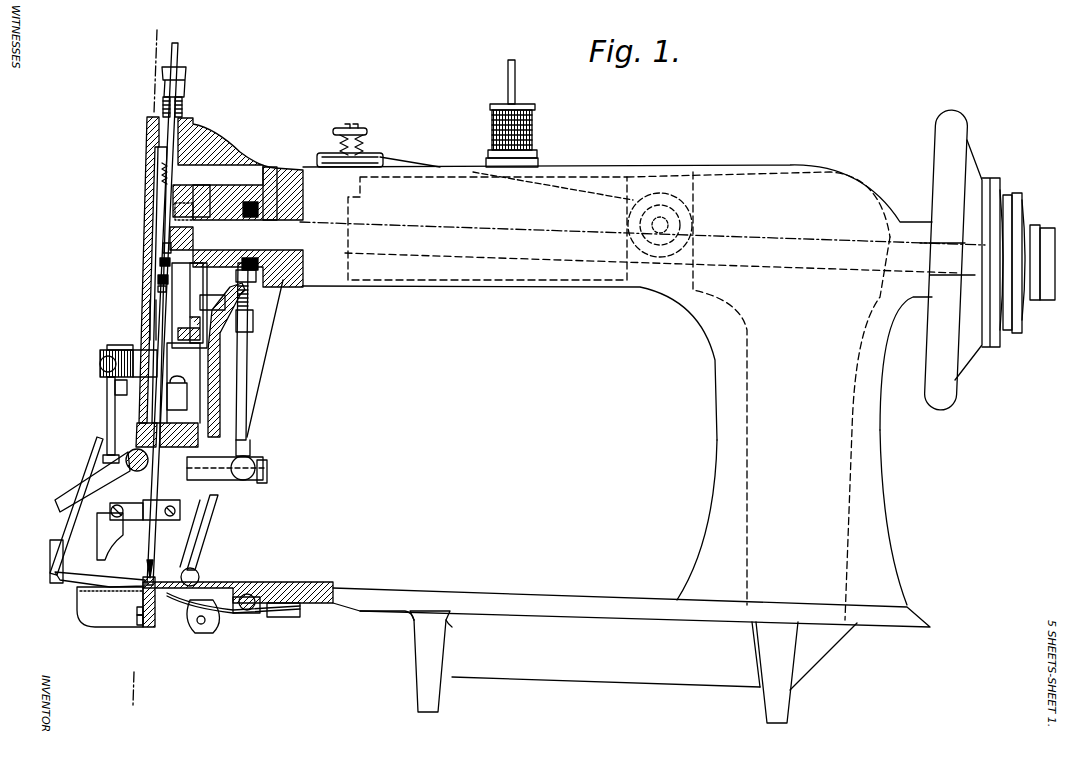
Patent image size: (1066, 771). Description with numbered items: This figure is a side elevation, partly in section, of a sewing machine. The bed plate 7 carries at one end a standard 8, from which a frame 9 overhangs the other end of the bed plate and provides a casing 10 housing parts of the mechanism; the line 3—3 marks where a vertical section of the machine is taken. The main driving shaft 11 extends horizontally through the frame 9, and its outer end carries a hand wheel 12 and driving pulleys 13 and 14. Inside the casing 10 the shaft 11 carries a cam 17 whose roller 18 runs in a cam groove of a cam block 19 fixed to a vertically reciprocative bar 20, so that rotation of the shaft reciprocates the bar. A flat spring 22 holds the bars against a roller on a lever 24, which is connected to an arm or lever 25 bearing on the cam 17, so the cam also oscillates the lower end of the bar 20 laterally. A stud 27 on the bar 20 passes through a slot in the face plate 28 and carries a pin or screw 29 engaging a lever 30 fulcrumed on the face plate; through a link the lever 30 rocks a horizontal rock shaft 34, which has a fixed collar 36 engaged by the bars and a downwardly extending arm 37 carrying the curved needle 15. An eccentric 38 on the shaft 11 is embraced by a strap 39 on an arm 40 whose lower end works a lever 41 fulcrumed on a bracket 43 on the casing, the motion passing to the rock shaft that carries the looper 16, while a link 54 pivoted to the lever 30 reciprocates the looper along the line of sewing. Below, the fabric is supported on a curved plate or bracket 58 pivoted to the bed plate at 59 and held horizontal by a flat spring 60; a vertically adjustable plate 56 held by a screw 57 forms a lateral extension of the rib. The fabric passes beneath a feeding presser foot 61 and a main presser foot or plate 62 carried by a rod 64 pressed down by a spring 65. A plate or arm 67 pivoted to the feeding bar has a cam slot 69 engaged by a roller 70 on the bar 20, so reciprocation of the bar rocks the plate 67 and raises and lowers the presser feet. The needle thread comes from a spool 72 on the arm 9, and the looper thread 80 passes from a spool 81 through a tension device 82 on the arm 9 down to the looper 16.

The section line 3— 3 is at (145, 369).
The bed plate 7 is at (490, 600).
The standard 8 is at (715, 455).
The frame 9 is at (445, 287).
The casing 10 is at (152, 199).
The main driving shaft 11 is at (277, 232).
The hand wheel 12 is at (961, 132).
The driving pulley 13 is at (986, 180).
The driving pulley 14 is at (1012, 200).
The needle 15 is at (100, 576).
The looper 16 is at (200, 578).
The cam 17 is at (205, 196).
The roller 18 is at (175, 210).
The cam block 19 is at (176, 240).
The reciprocative bar 20 is at (181, 56).
The flat spring 22 is at (183, 405).
The lever 24 is at (187, 327).
The arm or lever 25 is at (201, 290).
The stud 27 is at (133, 352).
The face plate 28 is at (160, 262).
The pin or screw 29 is at (101, 364).
The lever 30 is at (123, 390).
The rock shaft 34 is at (120, 462).
The collar 36 is at (140, 448).
The needle arm 37 is at (58, 508).
The eccentric 38 is at (262, 200).
The strap 39 is at (252, 202).
The arm 40 is at (249, 372).
The lever 41 is at (202, 510).
The bracket 43 is at (212, 488).
The link 54 is at (108, 418).
The adjustable plate 56 is at (143, 622).
The screw 57 is at (143, 613).
The bracket 58 is at (96, 612).
The pivot 59 is at (248, 608).
The flat spring 60 is at (210, 617).
The feeding presser foot 61 is at (152, 565).
The main presser foot 62 is at (130, 590).
The rod 64 is at (152, 315).
The spring 65 is at (164, 180).
The plate or arm 67 is at (158, 289).
The cam slot 69 is at (162, 248).
The roller 70 is at (157, 280).
The spool 72 is at (533, 132).
The looper thread 80 is at (389, 157).
The spool 81 is at (668, 194).
The tension device 82 is at (368, 150).